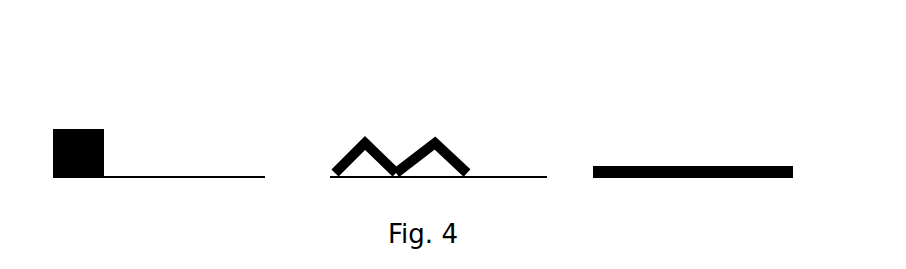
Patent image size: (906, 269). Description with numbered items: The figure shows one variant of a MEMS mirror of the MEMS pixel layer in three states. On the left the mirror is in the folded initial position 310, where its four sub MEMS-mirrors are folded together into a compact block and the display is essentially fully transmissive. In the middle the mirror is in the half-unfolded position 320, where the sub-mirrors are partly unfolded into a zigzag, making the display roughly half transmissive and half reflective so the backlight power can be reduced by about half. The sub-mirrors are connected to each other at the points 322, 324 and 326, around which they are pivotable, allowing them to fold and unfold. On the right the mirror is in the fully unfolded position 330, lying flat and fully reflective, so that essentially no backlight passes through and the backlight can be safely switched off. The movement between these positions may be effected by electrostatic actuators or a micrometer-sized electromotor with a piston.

The folded mirror position 310 is at (171, 118).
The half-unfolded mirror position 320 is at (437, 95).
The pivot connection point 322 is at (362, 125).
The pivot connection point 324 is at (395, 137).
The pivot connection point 326 is at (444, 133).
The unfolded mirror position 330 is at (692, 119).